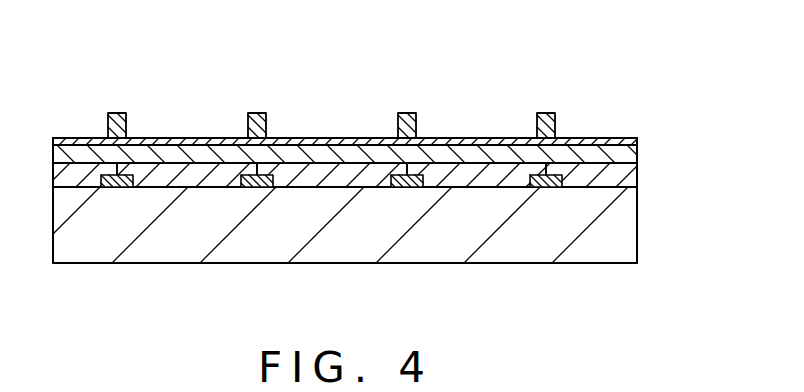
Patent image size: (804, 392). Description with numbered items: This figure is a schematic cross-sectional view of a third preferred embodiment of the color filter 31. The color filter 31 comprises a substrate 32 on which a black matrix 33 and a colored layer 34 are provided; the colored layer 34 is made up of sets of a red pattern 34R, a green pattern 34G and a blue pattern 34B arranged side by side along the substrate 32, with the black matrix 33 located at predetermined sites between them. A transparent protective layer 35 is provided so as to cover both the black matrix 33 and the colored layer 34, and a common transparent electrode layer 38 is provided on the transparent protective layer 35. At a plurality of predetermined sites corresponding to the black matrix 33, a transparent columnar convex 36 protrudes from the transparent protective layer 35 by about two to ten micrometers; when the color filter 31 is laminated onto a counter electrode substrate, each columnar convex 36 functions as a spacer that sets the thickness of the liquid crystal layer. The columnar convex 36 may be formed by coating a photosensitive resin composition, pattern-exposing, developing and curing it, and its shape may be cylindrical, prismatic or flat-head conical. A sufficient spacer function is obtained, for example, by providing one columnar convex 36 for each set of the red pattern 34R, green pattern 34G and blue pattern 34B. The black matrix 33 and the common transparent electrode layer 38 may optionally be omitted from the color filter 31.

The color filter 31 is at (455, 62).
The substrate 32 is at (627, 235).
The black matrix 33 is at (118, 187).
The colored layer 34 is at (399, 137).
The blue pattern 34B is at (83, 177).
The red pattern 34R is at (168, 172).
The green pattern 34G is at (330, 170).
The transparent protective layer 35 is at (640, 157).
The transparent columnar convex 36 is at (115, 113).
The common transparent electrode layer 38 is at (627, 137).